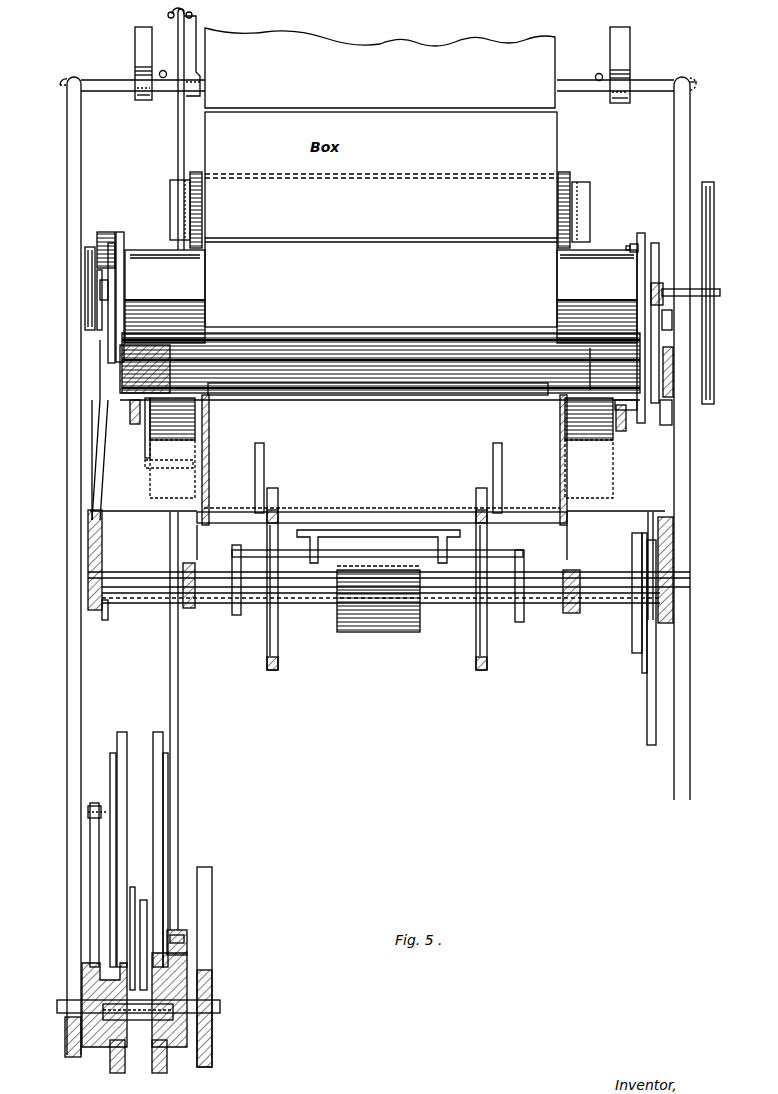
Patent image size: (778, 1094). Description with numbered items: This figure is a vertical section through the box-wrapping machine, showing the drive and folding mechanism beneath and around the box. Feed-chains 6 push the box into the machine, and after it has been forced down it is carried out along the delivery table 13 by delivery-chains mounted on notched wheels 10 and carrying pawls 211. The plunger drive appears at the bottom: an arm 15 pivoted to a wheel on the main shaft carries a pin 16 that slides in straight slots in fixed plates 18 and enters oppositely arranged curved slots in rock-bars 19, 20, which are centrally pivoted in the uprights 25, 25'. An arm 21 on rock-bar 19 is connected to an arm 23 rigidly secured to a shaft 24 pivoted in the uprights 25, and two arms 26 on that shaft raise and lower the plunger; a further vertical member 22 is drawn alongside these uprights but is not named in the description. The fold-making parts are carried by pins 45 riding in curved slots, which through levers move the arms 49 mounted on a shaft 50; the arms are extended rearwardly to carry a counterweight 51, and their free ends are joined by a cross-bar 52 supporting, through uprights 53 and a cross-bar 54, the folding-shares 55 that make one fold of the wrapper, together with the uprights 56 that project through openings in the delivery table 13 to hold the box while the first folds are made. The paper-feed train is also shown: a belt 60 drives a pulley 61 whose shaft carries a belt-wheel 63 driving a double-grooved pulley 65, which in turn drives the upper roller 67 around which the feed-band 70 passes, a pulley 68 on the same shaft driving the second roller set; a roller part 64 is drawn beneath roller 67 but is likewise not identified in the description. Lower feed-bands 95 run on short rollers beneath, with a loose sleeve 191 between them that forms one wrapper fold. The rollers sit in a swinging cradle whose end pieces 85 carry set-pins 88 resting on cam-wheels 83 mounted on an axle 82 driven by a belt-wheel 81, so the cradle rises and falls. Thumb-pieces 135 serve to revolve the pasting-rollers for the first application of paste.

The feed-chains 6 is at (196, 168).
The notched wheels 10 is at (270, 670).
The delivery table 13 is at (312, 510).
The arm 15 is at (138, 1008).
The pin 16 is at (110, 1050).
The fixed plates 18 is at (120, 778).
The rock-bar 19 is at (220, 1006).
The rock-bar 20 is at (66, 1020).
The arm 21 is at (188, 952).
The rod 22 is at (176, 140).
The arm 23 is at (203, 32).
The shaft 24 is at (103, 80).
The uprights 25 is at (372, 566).
The upright 25' is at (223, 967).
The arms 26 is at (135, 36).
The pins 45 is at (145, 369).
The arms 49 is at (236, 616).
The shaft 50 is at (150, 608).
The counterweight 51 is at (386, 632).
The cross-bar 52 is at (366, 552).
The uprights 53 is at (315, 534).
The cross-bar 54 is at (366, 522).
The folding-shares 55 is at (210, 450).
The uprights 56 is at (256, 464).
The belt 60 is at (642, 660).
The pulley 61 is at (632, 640).
The belt-wheel 63 is at (645, 716).
The cylinder 64 is at (381, 321).
The double-grooved pulley 65 is at (650, 398).
The roller 67 is at (381, 275).
The pulley 68 is at (86, 318).
The feed-band 70 is at (476, 666).
The belt-wheel 81 is at (720, 293).
The axle 82 is at (716, 296).
The cam-wheels 83 is at (119, 230).
The end pieces 85 is at (662, 313).
The set-pins 88 is at (118, 250).
The feed-bands 95 is at (630, 404).
The thumb-pieces 135 is at (138, 424).
The roller or sleeve 191 is at (318, 362).
The pawls 211 is at (276, 490).